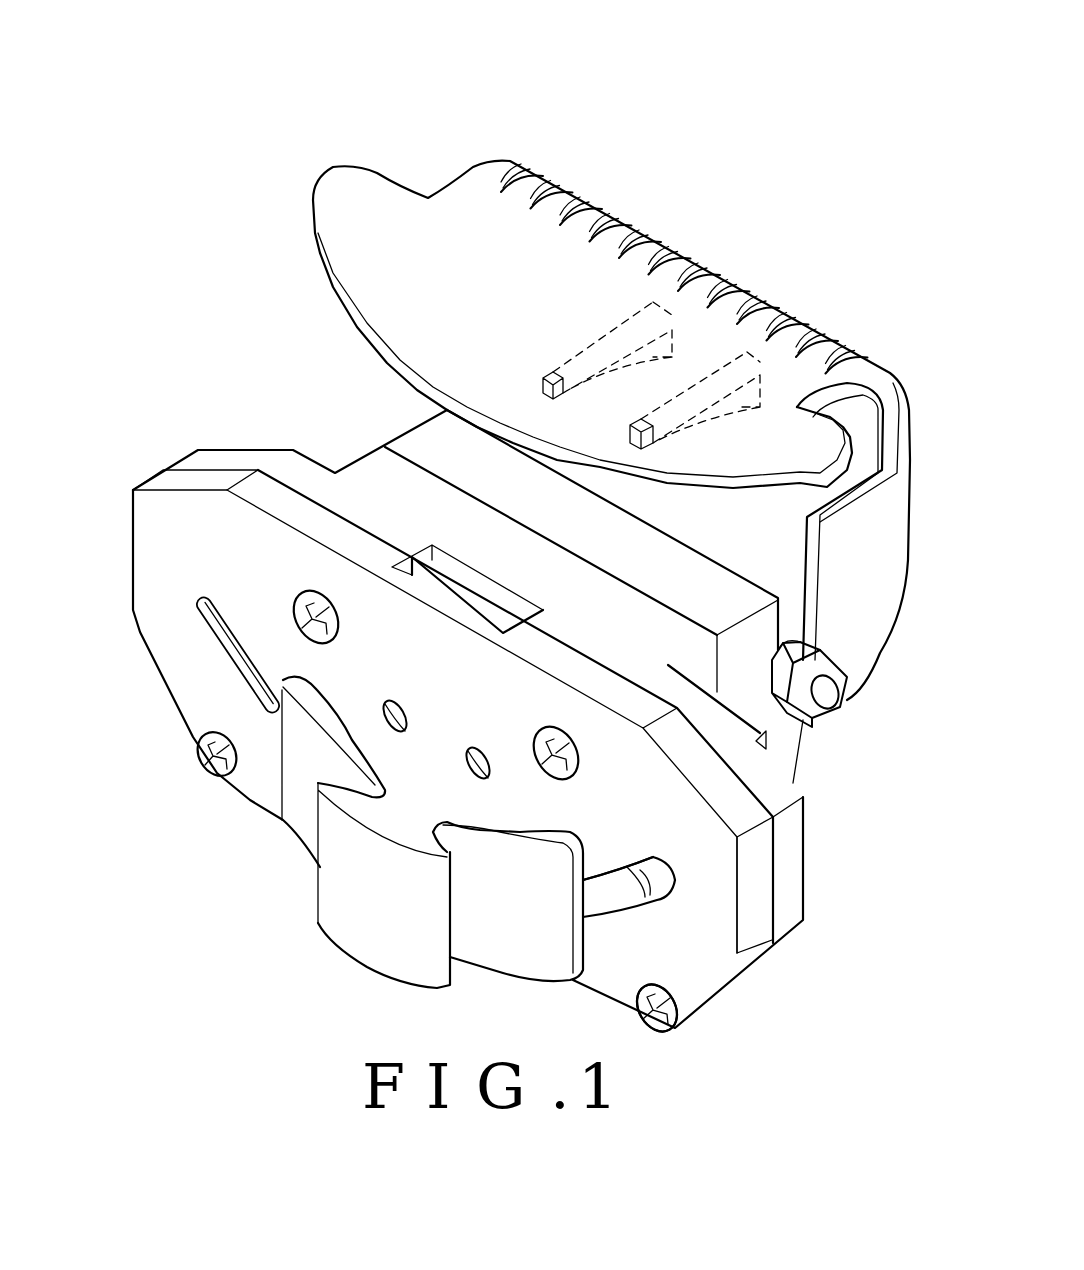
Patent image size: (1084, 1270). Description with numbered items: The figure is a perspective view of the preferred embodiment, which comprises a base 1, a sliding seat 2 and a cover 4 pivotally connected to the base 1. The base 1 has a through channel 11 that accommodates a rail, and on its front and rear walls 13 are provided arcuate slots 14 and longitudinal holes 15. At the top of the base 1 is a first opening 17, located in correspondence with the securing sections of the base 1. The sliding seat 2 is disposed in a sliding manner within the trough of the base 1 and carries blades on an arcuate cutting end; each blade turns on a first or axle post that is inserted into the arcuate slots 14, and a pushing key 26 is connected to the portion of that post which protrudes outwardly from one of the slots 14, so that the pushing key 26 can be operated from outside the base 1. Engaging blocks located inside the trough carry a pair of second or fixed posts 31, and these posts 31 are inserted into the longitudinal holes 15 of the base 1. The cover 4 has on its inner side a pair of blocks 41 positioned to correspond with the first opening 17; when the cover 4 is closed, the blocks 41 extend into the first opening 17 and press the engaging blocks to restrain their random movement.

The base 1 is at (380, 470).
The sliding seat 2 is at (627, 900).
The cover 4 is at (470, 200).
The through channel 11 is at (766, 740).
The front and rear walls 13 is at (690, 930).
The arcuate slots 14 is at (673, 1027).
The longitudinal holes 15 is at (383, 698).
The first opening 17 is at (433, 575).
The pushing key 26 is at (343, 920).
The second or fixed posts 31 is at (472, 789).
The blocks 41 is at (743, 378).